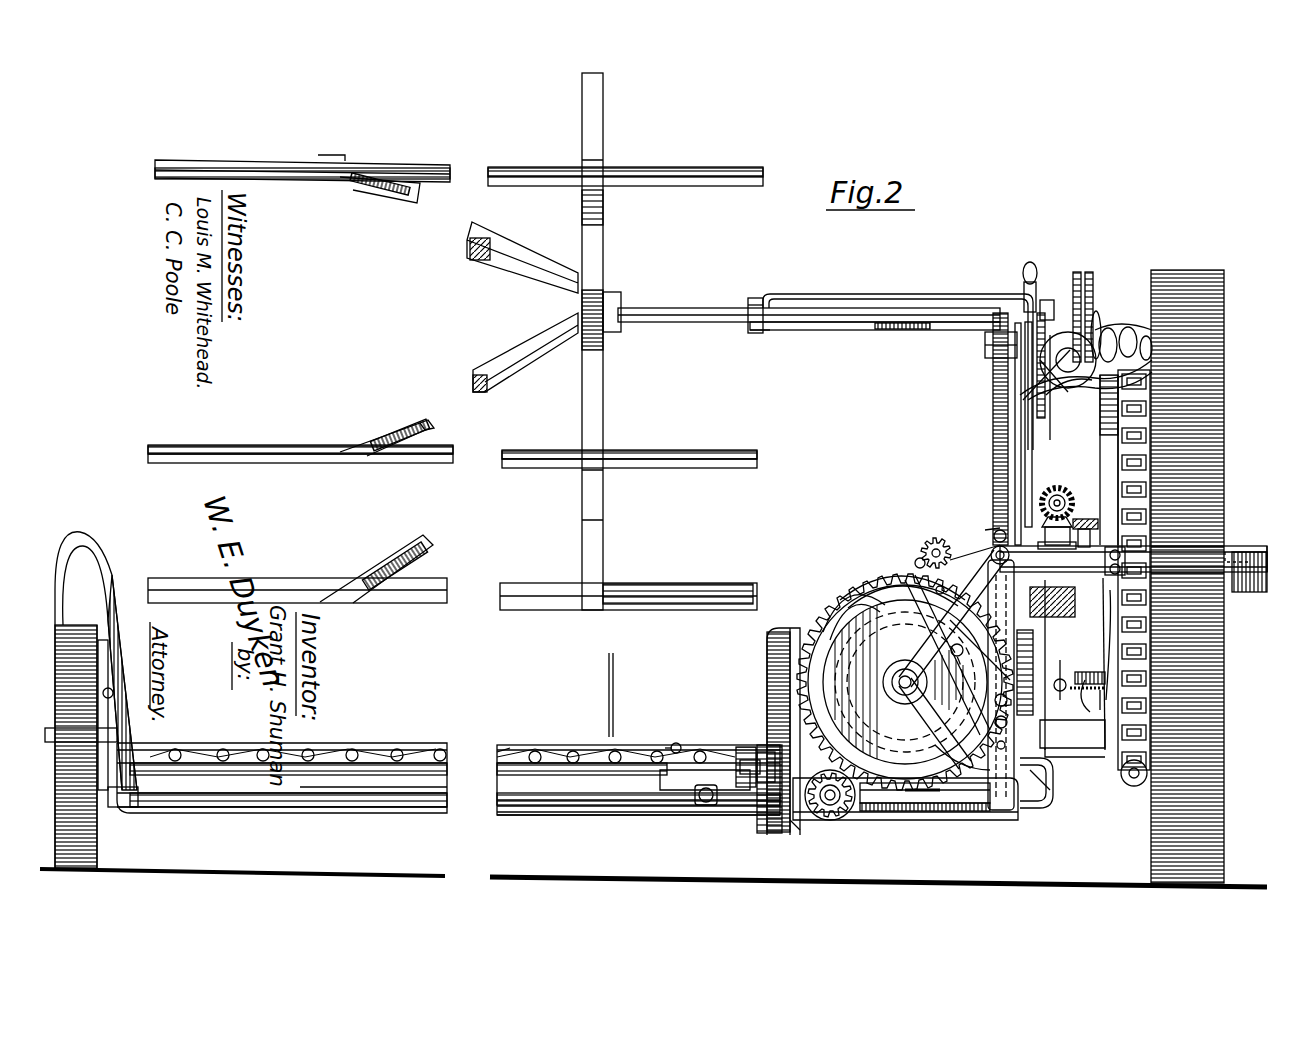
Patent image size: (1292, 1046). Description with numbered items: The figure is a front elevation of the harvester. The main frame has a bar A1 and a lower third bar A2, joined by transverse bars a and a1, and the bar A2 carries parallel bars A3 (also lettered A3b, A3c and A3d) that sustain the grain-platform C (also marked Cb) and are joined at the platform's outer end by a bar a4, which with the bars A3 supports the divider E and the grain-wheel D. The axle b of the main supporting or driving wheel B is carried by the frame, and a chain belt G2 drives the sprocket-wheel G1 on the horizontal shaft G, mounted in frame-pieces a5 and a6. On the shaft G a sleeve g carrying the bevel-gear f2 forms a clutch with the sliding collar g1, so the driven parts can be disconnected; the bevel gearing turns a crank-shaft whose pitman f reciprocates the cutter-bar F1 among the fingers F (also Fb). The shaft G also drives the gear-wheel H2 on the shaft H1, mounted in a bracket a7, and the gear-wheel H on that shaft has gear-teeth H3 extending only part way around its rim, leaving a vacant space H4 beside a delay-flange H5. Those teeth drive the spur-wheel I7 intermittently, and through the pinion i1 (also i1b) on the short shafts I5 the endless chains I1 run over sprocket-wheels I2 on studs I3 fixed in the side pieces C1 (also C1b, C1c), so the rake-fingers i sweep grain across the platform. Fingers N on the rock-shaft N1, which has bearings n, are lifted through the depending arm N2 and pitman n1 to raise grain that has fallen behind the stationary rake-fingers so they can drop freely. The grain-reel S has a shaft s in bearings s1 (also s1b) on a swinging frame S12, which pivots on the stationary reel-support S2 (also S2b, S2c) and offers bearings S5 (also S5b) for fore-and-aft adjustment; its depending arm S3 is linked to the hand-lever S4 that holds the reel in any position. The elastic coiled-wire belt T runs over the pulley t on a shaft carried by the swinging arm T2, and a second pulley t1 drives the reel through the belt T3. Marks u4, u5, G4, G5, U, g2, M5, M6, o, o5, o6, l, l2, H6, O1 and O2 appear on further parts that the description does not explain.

The grain-reel S is at (609, 341).
The reel shaft s is at (672, 318).
The stationary reel-support S2 is at (957, 302).
The rack rod S12 is at (850, 330).
The bearing S5 is at (760, 300).
The bearing s1 is at (750, 308).
The rod end S2b is at (770, 332).
The elastic endless belt T is at (993, 478).
The pulley t is at (985, 345).
The swinging arm T2 is at (1022, 470).
The depending rigid arm S3 is at (1045, 405).
The rod S2c is at (1045, 445).
The knob S5b is at (1036, 292).
The hand-lever S4 is at (1076, 280).
The belt T3 is at (1093, 292).
The pulley t1 is at (1100, 318).
The pin s1b is at (1045, 312).
The gear u4 is at (1066, 500).
The bevel gear u5 is at (1071, 520).
The main supporting or driving wheel B is at (1187, 576).
The chain belt G2 is at (1150, 460).
The sprocket G5 is at (1128, 778).
The transverse bar a is at (1133, 559).
The axle b is at (1249, 580).
The main-frame bar A1 is at (1268, 546).
The horizontal shaft G is at (1103, 556).
The bar G4 is at (1050, 636).
The sprocket-wheel G1 is at (1108, 640).
The lever U is at (1082, 679).
The rack g2 is at (1090, 671).
The sleeve g is at (1086, 705).
The collar g1 is at (1100, 705).
The bevel-gear f2 is at (1060, 700).
The frame-piece a5 is at (1072, 738).
The bracket a7 is at (1075, 615).
The frame-piece a6 is at (1052, 766).
The frame A3c is at (1052, 786).
The slide bar M5 is at (999, 685).
The guide M6 is at (1009, 672).
The pin o is at (956, 643).
The bar a4 is at (945, 632).
The pin o5 is at (994, 536).
The pin o6 is at (990, 519).
The lever l is at (952, 555).
The pinion l2 is at (935, 540).
The pinion i1 is at (917, 560).
The endless chain I1 is at (915, 600).
The vacant space H4 is at (935, 729).
The gear-wheel H is at (822, 695).
The gear-wheel H2 is at (905, 682).
The shaft H1 is at (884, 690).
The gear-teeth H3 is at (905, 568).
The arm H6 is at (840, 595).
The delay-flange H5 is at (962, 762).
The bracket O2 is at (767, 675).
The bracket O1 is at (806, 628).
The sprocket-wheel I2 is at (784, 752).
The grain-platform C is at (638, 772).
The finger F is at (553, 752).
The cutter-bar F1 is at (503, 752).
The vertical side piece C1 is at (644, 787).
The finger N is at (743, 748).
The rock-shaft N1 is at (676, 745).
The depending arm N2 is at (687, 738).
The bearing n is at (668, 748).
The pitman n1 is at (762, 752).
The parallel bar A3 is at (702, 815).
The base A3b is at (522, 812).
The third bar A2 is at (1003, 815).
The short shaft I5 is at (830, 818).
The stud I3 is at (822, 805).
The spur-wheel I7 is at (848, 812).
The rake-finger i is at (925, 793).
The pitman f is at (918, 794).
The frame bar C1b is at (925, 797).
The pin i1b is at (794, 831).
The grain-wheel D is at (96, 700).
The divider E is at (122, 680).
The transverse bar a1 is at (128, 705).
The frame bar Cb is at (282, 766).
The roller Fb is at (305, 758).
The frame bar C1c is at (373, 776).
The base A3d is at (290, 813).